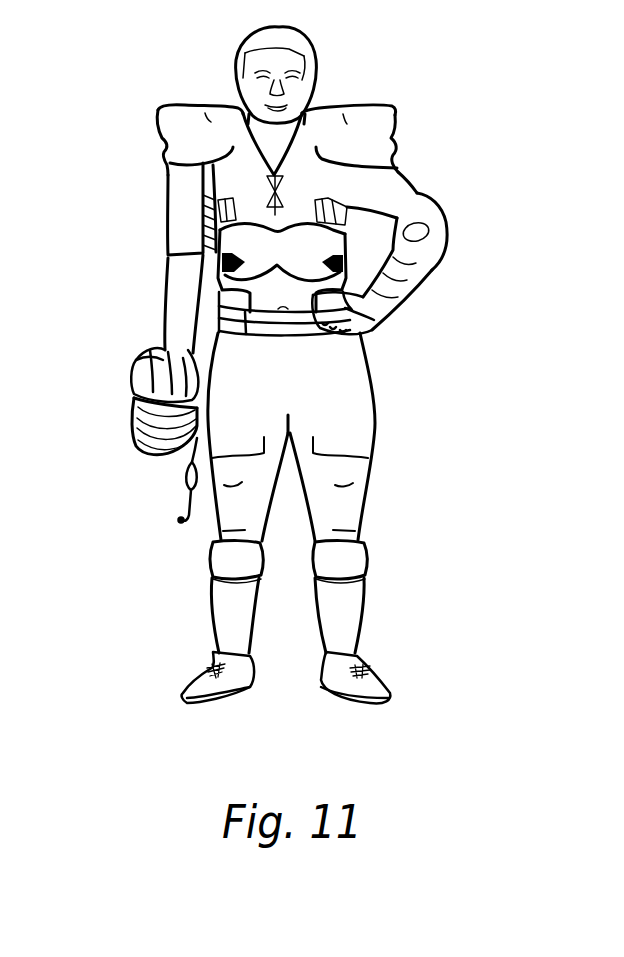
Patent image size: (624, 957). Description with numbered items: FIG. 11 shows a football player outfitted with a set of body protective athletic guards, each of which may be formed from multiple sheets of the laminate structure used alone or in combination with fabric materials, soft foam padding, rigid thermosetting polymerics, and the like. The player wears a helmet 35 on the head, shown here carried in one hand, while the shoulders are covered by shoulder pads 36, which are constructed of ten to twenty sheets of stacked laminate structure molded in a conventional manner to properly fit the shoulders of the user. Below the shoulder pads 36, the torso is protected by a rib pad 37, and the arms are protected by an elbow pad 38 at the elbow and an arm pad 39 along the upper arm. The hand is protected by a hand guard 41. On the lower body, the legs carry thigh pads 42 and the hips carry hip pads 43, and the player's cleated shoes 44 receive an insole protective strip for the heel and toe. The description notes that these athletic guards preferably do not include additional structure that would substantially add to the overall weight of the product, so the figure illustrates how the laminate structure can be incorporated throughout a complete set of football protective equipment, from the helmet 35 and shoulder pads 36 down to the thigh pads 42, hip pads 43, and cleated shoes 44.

The helmet 35 is at (132, 381).
The shoulder pads 36 is at (363, 107).
The rib pad 37 is at (310, 242).
The elbow pad 38 is at (442, 218).
The arm pad 39 is at (180, 227).
The hand guard 41 is at (130, 368).
The thigh pads 42 is at (352, 412).
The hip pads 43 is at (330, 303).
The cleated shoes 44 is at (377, 692).